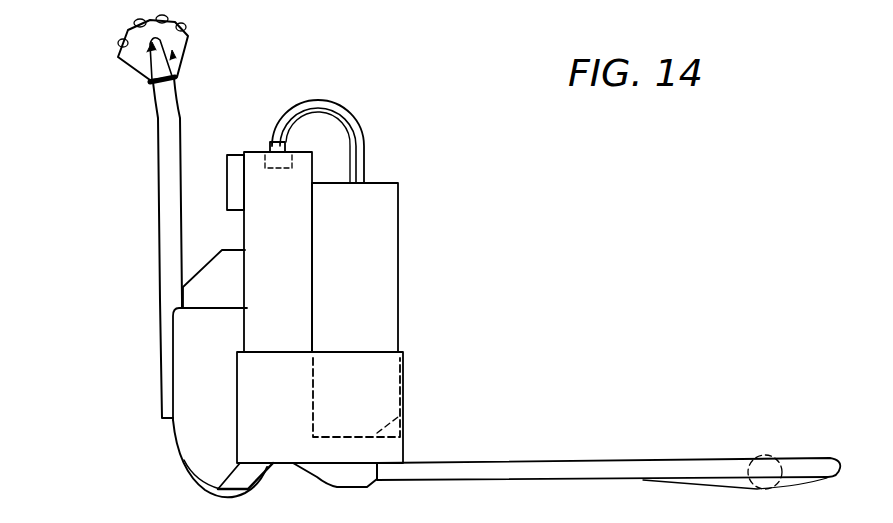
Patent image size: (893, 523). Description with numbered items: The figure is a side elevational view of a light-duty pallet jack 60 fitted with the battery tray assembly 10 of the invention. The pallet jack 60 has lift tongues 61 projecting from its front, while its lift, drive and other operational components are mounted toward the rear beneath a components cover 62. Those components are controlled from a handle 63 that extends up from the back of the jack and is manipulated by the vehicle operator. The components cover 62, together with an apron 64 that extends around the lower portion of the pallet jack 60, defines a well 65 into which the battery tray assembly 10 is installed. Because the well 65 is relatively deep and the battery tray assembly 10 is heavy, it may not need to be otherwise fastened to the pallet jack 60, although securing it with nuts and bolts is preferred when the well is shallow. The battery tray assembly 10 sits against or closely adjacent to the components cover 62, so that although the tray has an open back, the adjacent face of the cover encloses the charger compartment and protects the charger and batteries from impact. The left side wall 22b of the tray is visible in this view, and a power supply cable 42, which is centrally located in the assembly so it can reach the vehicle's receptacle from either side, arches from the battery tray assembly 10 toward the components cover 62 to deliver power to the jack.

The battery tray assembly 10 is at (400, 262).
The left side wall 22b is at (372, 228).
The power supply cable 42 is at (357, 123).
The pallet jack 60 is at (120, 183).
The lift tongues 61 is at (698, 465).
The components cover 62 is at (292, 267).
The handle 63 is at (172, 90).
The apron 64 is at (260, 445).
The well 65 is at (405, 410).